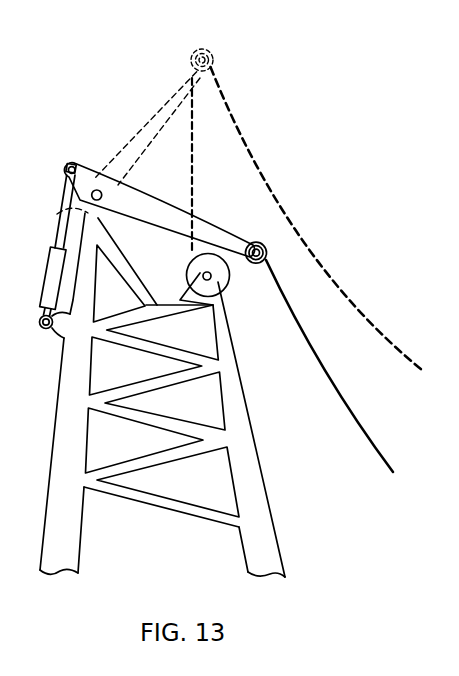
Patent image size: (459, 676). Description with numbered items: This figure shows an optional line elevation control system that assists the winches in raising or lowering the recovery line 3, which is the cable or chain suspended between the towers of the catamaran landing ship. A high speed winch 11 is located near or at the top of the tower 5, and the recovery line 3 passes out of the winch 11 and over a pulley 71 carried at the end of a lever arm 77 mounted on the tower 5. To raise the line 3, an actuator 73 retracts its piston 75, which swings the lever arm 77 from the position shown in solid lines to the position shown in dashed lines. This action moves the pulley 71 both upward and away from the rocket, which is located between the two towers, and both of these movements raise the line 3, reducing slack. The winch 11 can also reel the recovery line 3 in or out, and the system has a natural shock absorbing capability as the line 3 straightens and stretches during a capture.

The recovery line 3 is at (327, 366).
The tower 5 is at (250, 445).
The high speed winch 11 is at (228, 275).
The pulley 71 is at (204, 47).
The actuator 73 is at (50, 292).
The piston 75 is at (58, 233).
The lever arm 77 is at (137, 145).